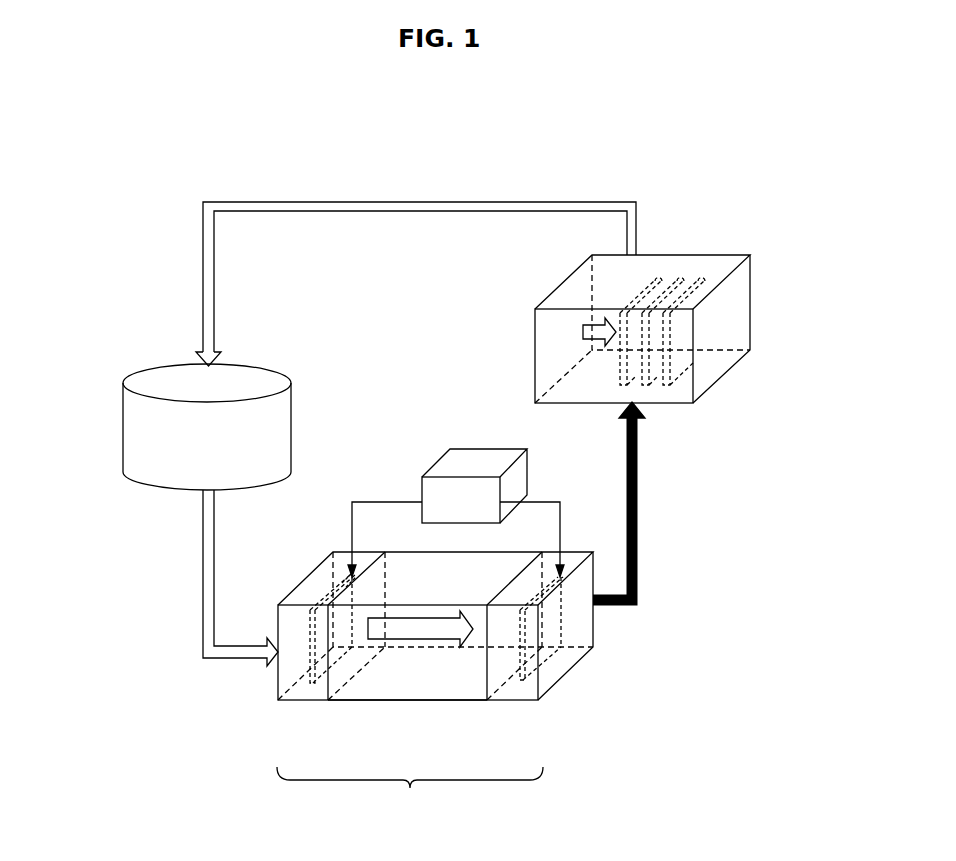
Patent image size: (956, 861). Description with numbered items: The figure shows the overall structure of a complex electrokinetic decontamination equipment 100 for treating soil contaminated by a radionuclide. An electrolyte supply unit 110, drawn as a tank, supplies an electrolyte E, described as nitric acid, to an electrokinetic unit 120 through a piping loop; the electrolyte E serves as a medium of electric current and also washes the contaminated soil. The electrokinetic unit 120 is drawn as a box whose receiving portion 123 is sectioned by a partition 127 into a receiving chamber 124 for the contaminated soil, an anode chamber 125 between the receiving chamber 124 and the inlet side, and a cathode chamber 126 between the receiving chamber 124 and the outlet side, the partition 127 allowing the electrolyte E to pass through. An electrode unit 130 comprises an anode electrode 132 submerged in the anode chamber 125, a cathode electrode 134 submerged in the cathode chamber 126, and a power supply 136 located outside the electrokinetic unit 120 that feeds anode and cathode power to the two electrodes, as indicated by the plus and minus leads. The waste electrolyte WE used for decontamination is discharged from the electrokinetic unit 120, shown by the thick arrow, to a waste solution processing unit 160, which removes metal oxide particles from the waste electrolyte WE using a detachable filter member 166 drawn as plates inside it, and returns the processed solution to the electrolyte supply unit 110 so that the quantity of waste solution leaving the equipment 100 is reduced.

The complex electrokinetic decontamination equipment 100 is at (458, 113).
The electrolyte supply unit 110 is at (159, 364).
The electrokinetic unit 120 is at (603, 628).
The receiving portion 123 is at (410, 795).
The receiving chamber 124 is at (406, 693).
The anode chamber 125 is at (302, 693).
The cathode chamber 126 is at (512, 693).
The partition 127 is at (349, 584).
The electrode unit 130 is at (432, 460).
The anode electrode 132 is at (307, 662).
The cathode electrode 134 is at (545, 650).
The power supply 136 is at (470, 449).
The waste solution processing unit 160 is at (686, 241).
The filter member 166 is at (700, 348).
The electrolyte E is at (203, 270).
The waste electrolyte WE is at (640, 500).